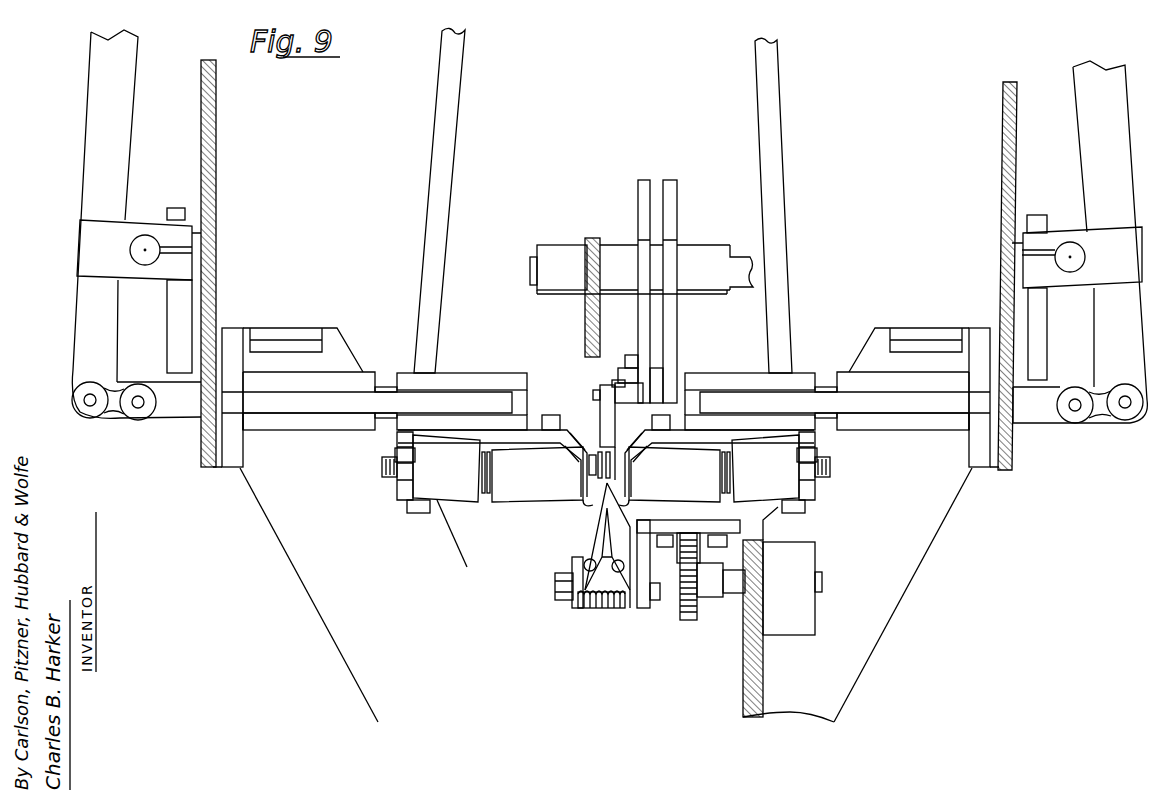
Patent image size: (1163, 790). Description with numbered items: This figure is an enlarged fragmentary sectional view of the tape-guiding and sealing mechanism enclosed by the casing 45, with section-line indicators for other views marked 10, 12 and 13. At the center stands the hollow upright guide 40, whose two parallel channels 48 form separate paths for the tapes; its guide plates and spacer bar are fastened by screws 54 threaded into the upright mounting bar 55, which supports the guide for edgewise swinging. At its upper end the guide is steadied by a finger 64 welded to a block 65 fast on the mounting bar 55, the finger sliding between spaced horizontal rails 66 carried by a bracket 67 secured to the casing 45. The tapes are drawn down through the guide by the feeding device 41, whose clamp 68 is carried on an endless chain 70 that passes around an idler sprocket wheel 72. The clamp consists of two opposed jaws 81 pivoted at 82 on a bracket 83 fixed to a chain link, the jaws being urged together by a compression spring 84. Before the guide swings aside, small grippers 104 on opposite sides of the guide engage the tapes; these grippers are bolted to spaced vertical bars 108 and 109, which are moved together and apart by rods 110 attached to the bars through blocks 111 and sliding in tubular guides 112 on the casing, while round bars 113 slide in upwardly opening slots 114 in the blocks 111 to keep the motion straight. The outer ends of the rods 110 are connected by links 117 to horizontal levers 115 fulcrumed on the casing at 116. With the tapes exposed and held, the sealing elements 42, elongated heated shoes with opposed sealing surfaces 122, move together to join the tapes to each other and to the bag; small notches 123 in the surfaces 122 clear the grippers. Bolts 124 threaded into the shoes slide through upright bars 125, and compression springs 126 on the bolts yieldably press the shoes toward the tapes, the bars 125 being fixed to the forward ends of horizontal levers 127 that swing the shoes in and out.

The section line for FIG. 10 is at (818, 177).
The section line for FIG. 12 is at (40, 347).
The section line for FIG. 13 is at (585, 333).
The hollow upright guide 40 is at (602, 432).
The feeding device 41 is at (598, 620).
The sealing elements 42 is at (520, 500).
The casing 45 is at (743, 692).
The channels 48 is at (592, 470).
The screws 54 is at (593, 395).
The mounting bar 55 is at (626, 398).
The finger 64 is at (660, 374).
The block 65 is at (615, 382).
The horizontal rails 66 is at (668, 318).
The bracket 67 is at (585, 312).
The clamp 68 is at (590, 537).
The endless chain 70 is at (694, 556).
The idler sprocket wheel 72 is at (690, 620).
The jaws 81 is at (605, 515).
The pivots 82 is at (584, 563).
The bracket 83 is at (648, 605).
The compression spring 84 is at (610, 609).
The grippers 104 is at (580, 456).
The vertical bar 108 is at (533, 443).
The vertical bar 109 is at (684, 440).
The rods 110 is at (186, 418).
The blocks 111 is at (496, 375).
The tubular guides 112 is at (338, 430).
The round bars 113 is at (309, 412).
The slots 114 is at (462, 391).
The horizontal levers 115 is at (88, 180).
The fulcrum 116 is at (130, 252).
The links 117 is at (113, 419).
The sealing surfaces 122 is at (585, 505).
The notches 123 is at (597, 466).
The bolts 124 is at (385, 472).
The upright bars 125 is at (445, 500).
The compression springs 126 is at (484, 496).
The horizontal levers 127 is at (431, 205).